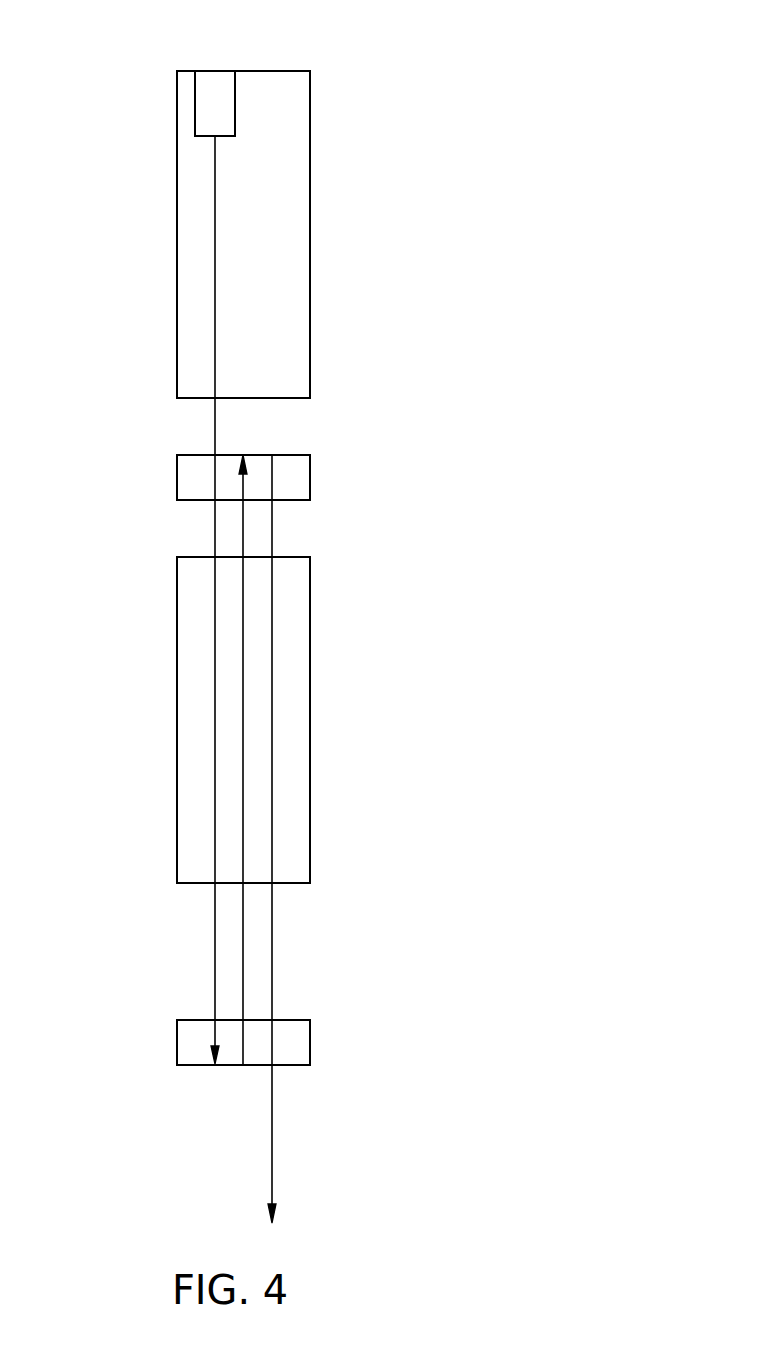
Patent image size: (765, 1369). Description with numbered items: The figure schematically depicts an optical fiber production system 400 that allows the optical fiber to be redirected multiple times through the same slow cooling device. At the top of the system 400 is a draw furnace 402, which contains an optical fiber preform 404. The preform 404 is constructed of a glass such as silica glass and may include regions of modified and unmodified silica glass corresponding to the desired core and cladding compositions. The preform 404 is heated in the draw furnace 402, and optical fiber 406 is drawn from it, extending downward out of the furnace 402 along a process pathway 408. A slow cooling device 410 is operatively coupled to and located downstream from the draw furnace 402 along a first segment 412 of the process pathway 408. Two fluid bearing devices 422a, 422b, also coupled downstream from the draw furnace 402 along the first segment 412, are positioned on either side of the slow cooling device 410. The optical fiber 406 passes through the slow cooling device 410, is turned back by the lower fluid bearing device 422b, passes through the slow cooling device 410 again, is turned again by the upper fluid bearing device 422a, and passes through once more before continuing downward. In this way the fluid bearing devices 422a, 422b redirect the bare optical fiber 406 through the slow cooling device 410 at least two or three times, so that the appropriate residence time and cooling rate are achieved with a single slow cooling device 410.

The system 400 is at (367, 108).
The draw furnace 402 is at (177, 113).
The optical fiber preform 404 is at (236, 103).
The optical fiber 406 is at (215, 248).
The process pathway 408 is at (340, 422).
The slow cooling device 410 is at (178, 600).
The first segment 412 is at (155, 738).
The fluid bearing device 422a is at (310, 477).
The fluid bearing device 422b is at (310, 1042).